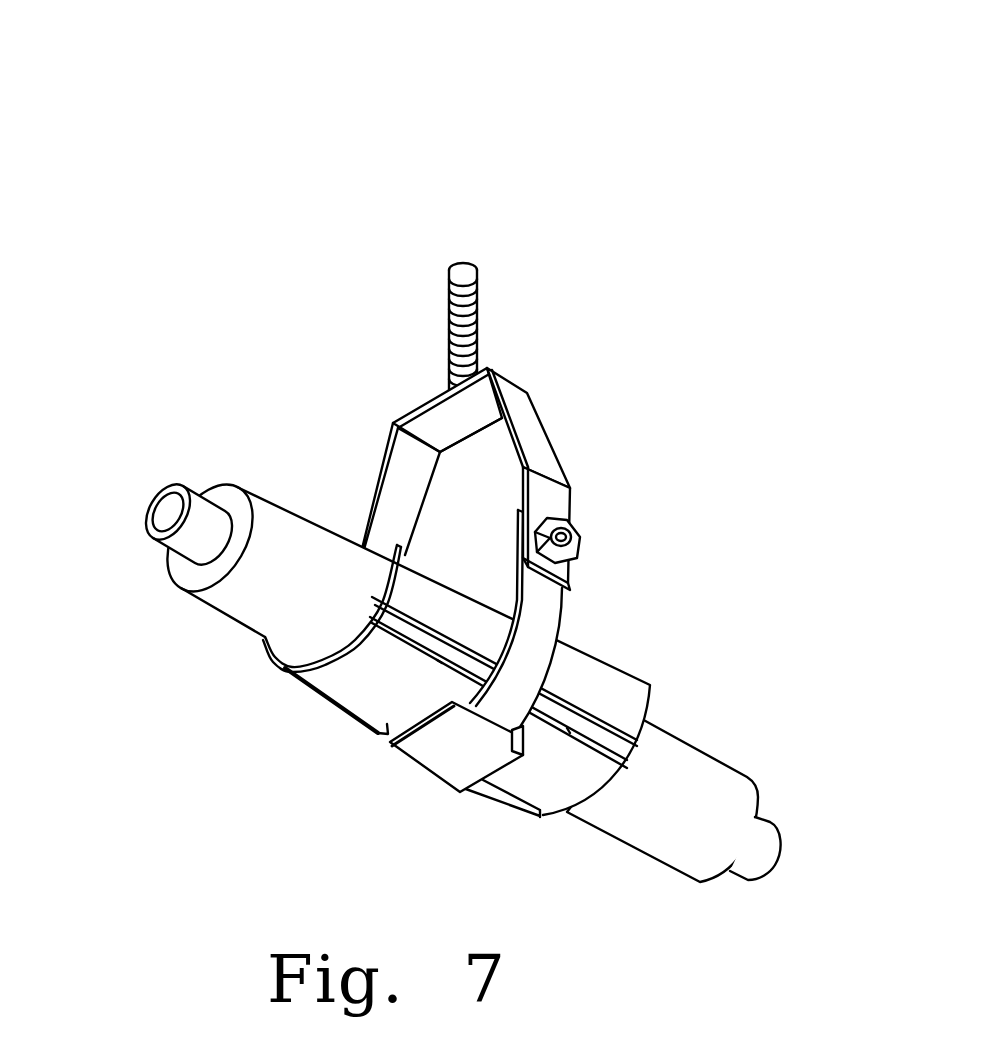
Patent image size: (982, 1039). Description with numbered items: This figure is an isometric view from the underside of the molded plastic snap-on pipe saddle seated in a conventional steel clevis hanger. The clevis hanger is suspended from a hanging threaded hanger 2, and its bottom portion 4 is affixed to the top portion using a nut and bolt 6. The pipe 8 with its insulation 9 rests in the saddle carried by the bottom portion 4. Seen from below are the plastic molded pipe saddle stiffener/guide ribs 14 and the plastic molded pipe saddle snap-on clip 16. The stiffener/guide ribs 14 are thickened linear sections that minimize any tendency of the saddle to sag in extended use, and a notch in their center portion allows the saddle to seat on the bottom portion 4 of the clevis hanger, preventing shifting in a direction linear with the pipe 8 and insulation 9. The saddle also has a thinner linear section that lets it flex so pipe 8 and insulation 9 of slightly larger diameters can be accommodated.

The threaded hanger 2 is at (452, 258).
The bottom portion 4 is at (555, 632).
The nut and bolt 6 is at (573, 537).
The pipe 8 is at (162, 485).
The insulation 9 is at (237, 482).
The stiffener/guide ribs 14 is at (337, 707).
The snap-on clip 16 is at (415, 763).